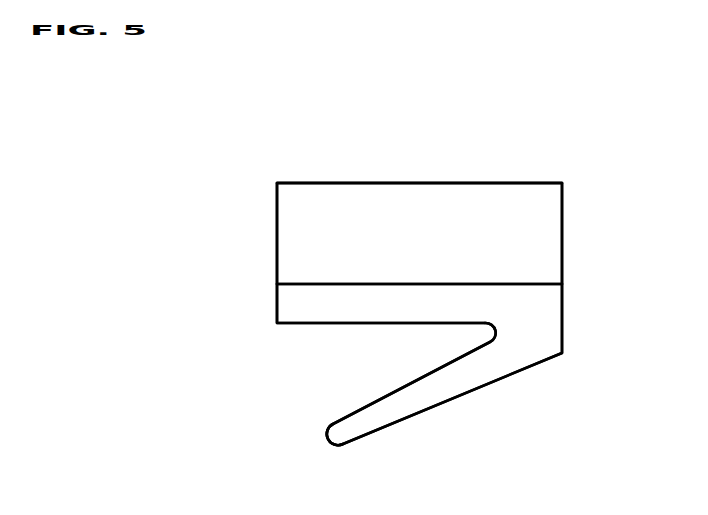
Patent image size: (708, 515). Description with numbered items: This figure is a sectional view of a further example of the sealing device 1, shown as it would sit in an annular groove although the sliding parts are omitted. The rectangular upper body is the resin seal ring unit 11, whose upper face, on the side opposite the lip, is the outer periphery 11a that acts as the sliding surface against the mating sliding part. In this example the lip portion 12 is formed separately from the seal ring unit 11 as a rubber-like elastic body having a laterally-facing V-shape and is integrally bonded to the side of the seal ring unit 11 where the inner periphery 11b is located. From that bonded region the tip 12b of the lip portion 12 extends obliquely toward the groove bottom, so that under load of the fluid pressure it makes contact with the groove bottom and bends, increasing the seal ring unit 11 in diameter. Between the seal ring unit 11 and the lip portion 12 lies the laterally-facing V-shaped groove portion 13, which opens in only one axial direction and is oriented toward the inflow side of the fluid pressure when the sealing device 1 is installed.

The sealing device 1 is at (526, 160).
The seal ring unit 11 is at (547, 214).
The outer periphery 11a is at (381, 183).
The inner periphery 11b is at (296, 284).
The lip portion 12 is at (452, 390).
The tip 12b is at (332, 434).
The groove portion 13 is at (305, 347).